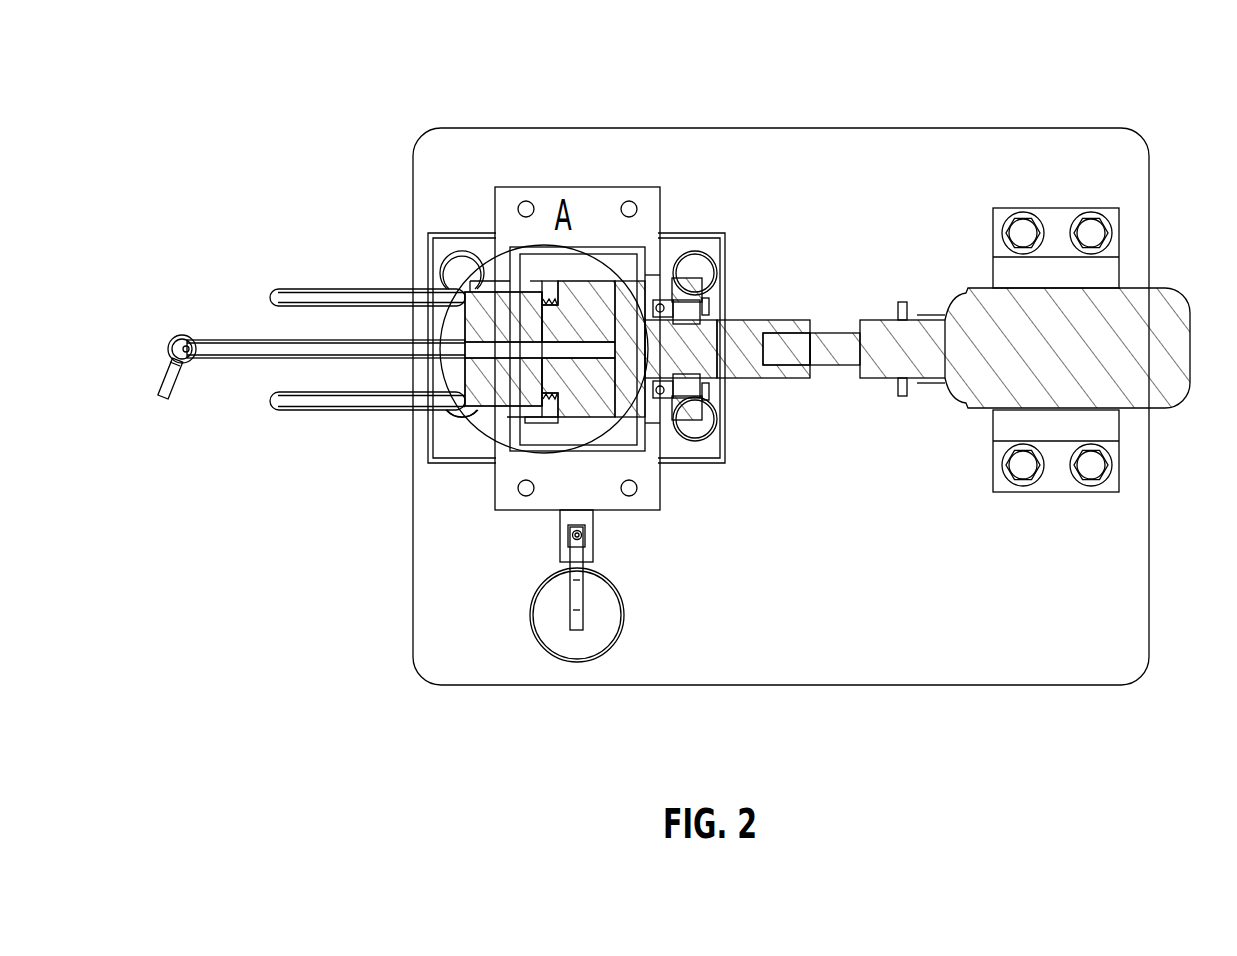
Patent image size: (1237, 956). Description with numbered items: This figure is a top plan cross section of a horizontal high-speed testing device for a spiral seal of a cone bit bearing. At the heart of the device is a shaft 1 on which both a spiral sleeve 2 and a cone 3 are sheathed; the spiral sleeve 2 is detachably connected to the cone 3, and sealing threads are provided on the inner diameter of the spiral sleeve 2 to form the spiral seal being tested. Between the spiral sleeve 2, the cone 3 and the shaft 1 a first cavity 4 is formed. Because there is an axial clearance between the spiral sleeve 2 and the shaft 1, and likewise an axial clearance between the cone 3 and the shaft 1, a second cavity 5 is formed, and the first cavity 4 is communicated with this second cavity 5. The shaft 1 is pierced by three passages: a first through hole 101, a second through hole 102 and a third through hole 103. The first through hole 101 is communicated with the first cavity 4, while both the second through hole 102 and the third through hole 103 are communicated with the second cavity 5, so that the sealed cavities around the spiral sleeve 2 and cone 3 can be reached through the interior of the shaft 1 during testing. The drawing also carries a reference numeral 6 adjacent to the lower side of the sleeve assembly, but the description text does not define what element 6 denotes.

The shaft 1 is at (492, 323).
The spiral sleeve 2 is at (553, 292).
The cone 3 is at (607, 295).
The first cavity 4 is at (613, 350).
The second cavity 5 is at (547, 423).
The lower spring 6 is at (552, 428).
The first through hole 101 is at (551, 352).
The second through hole 102 is at (508, 402).
The third through hole 103 is at (516, 312).